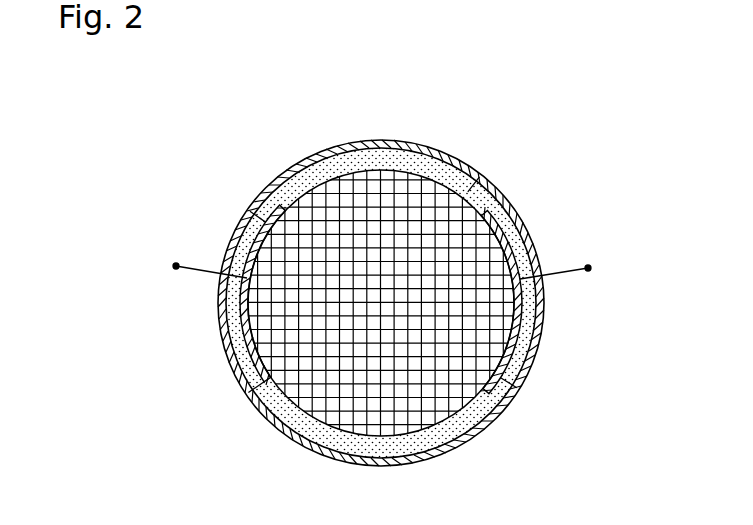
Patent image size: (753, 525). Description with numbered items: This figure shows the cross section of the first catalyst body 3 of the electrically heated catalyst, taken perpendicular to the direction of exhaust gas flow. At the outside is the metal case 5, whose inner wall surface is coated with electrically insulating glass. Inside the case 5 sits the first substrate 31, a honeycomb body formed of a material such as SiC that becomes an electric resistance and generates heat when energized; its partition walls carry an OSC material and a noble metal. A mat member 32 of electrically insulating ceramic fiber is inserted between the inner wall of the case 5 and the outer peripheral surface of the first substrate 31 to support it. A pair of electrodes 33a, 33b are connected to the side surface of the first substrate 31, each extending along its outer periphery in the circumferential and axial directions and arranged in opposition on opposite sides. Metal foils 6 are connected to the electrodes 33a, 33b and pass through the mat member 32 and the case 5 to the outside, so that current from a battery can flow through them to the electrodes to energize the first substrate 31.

The first catalyst body 3 is at (248, 137).
The case 5 is at (440, 151).
The first substrate 31 is at (488, 172).
The mat member 32 is at (353, 160).
The electrode 33a is at (253, 375).
The electrode 33b is at (520, 373).
The metal foil 6 is at (198, 264).